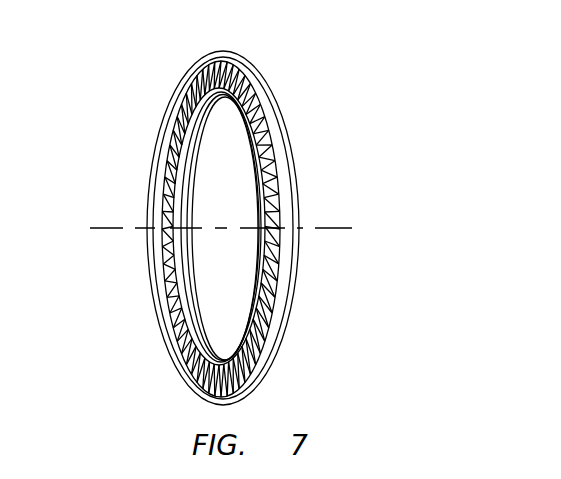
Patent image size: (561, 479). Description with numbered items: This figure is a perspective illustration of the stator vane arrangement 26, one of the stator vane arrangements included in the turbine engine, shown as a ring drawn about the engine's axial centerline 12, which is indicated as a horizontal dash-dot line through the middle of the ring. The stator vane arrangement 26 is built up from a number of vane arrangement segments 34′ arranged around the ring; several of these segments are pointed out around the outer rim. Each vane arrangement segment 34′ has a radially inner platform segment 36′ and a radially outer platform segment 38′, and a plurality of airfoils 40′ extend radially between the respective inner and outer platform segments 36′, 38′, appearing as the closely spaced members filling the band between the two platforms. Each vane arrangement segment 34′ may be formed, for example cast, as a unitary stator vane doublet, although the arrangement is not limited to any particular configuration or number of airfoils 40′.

The stator vane arrangement 26 is at (253, 212).
The vane arrangement segment 34′ is at (295, 152).
The inner platform segment 36′ is at (255, 170).
The outer platform segment 38′ is at (277, 170).
The airfoil 40′ is at (257, 155).
The axial centerline 12 is at (332, 232).